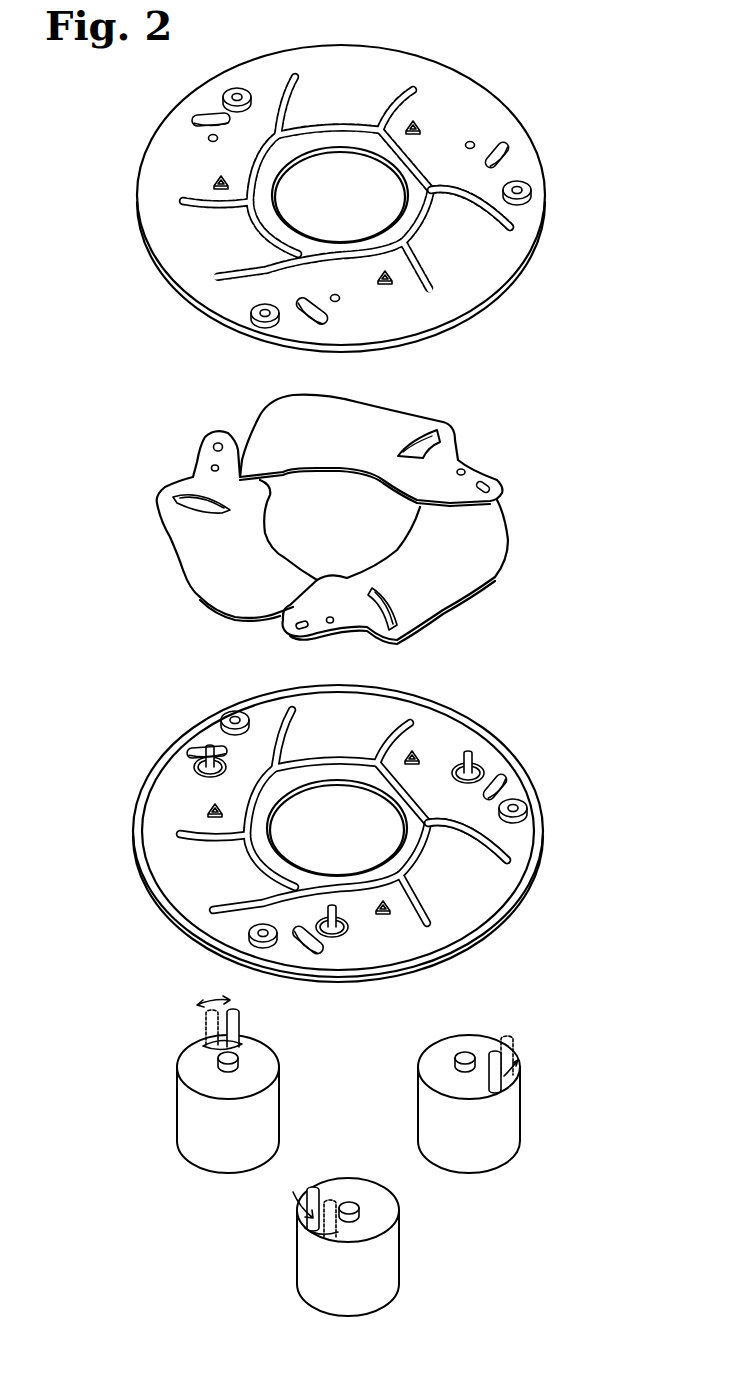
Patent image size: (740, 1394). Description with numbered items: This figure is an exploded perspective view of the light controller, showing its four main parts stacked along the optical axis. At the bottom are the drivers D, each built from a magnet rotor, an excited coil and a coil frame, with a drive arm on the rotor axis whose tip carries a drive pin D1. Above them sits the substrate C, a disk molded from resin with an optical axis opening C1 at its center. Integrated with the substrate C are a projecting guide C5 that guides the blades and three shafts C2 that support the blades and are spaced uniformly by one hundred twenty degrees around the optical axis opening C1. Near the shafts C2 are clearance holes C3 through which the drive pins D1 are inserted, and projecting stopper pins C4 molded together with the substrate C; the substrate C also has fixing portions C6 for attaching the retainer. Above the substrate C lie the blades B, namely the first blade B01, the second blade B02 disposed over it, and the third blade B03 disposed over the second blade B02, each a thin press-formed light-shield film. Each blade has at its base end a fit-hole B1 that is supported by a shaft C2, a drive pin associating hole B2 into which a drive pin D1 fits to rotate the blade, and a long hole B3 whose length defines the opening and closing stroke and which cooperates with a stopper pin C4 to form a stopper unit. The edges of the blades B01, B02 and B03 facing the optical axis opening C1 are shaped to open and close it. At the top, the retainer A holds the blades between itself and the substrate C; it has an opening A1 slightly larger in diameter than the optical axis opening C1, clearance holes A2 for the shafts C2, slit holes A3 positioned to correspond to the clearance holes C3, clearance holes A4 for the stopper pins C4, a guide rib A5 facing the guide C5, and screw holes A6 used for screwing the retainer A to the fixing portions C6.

The retainer A is at (553, 63).
The opening A1 is at (367, 175).
The clearance holes for the shafts A2 is at (475, 140).
The slit holes A3 is at (508, 153).
The clearance holes for the stopper pins A4 is at (423, 123).
The guide rib A5 is at (425, 223).
The screw holes A6 is at (532, 188).
The blades B is at (530, 418).
The first blade B01 is at (215, 580).
The second blade B02 is at (467, 573).
The third blade B03 is at (287, 418).
The fit-hole B1 is at (465, 468).
The drive pin associating hole B2 is at (490, 486).
The long hole B3 is at (427, 447).
The substrate C is at (548, 687).
The optical axis opening C1 is at (380, 797).
The shafts C2 is at (470, 752).
The clearance holes C3 is at (505, 776).
The stopper pins C4 is at (417, 748).
The guide C5 is at (410, 852).
The fixing portions C6 is at (528, 806).
The drivers D is at (548, 1012).
The drive pin D1 is at (493, 1048).